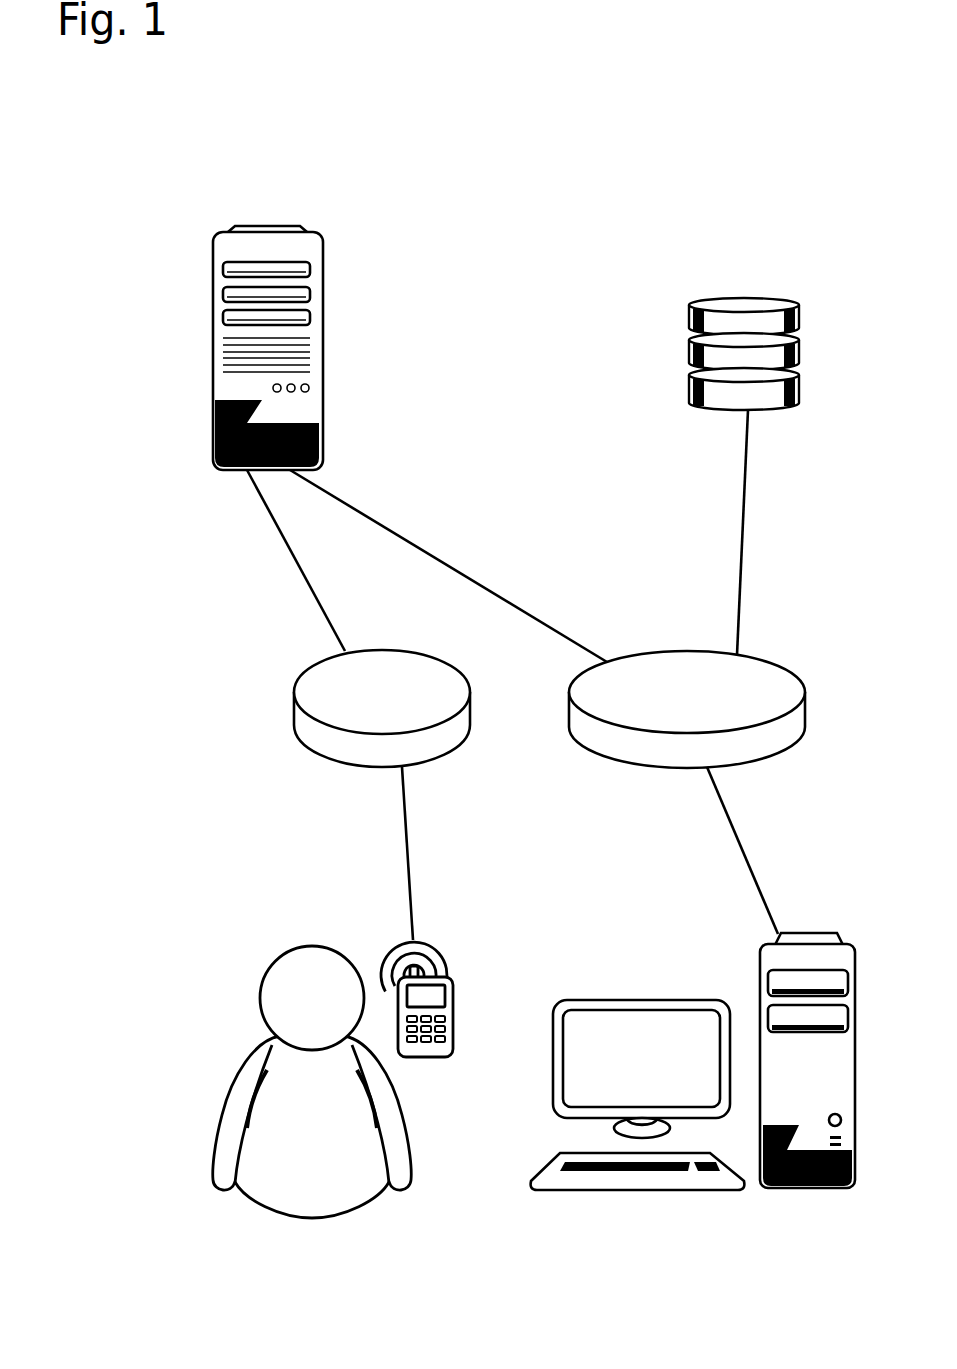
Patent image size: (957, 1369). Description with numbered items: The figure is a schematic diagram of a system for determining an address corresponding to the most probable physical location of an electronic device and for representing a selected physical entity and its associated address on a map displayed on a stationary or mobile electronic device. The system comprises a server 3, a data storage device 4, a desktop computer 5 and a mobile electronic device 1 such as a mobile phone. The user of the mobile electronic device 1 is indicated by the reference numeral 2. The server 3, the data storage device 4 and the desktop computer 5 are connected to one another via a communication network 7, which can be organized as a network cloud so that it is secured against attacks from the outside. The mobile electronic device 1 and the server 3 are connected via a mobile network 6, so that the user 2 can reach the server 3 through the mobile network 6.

The mobile electronic device 1 is at (455, 997).
The user 2 is at (398, 1130).
The server 3 is at (323, 257).
The data storage device 4 is at (700, 298).
The desktop computer 5 is at (787, 933).
The mobile network 6 is at (353, 765).
The communication network 7 is at (678, 652).